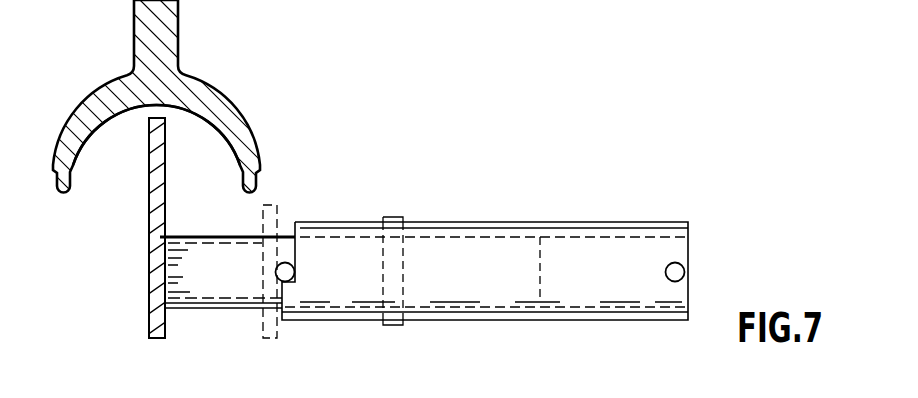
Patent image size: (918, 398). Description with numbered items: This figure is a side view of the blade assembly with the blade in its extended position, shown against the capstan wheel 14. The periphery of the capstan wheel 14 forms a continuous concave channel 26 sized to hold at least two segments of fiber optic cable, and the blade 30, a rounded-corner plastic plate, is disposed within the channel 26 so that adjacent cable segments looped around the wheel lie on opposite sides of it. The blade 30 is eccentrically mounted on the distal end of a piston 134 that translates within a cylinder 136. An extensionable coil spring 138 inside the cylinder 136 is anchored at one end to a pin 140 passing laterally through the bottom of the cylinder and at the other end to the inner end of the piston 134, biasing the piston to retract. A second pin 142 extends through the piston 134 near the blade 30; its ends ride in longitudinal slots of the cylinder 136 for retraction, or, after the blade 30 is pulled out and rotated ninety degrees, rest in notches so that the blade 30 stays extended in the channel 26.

The capstan wheel 14 is at (178, 23).
The channel 26 is at (122, 125).
The blade 30 is at (150, 257).
The piston 134 is at (212, 308).
The cylinder 136 is at (443, 223).
The extensionable coil spring 138 is at (666, 397).
The pin 140 is at (685, 271).
The second pin 142 is at (284, 262).